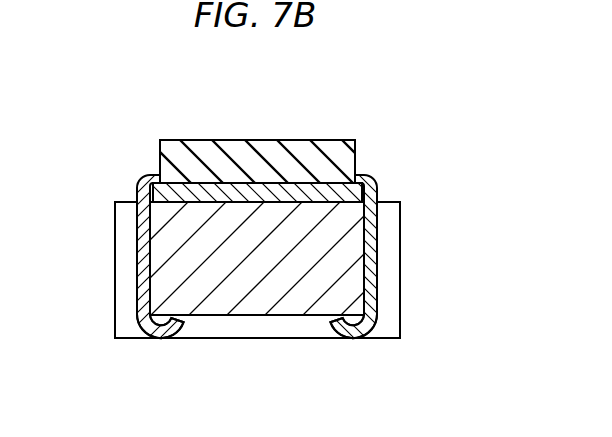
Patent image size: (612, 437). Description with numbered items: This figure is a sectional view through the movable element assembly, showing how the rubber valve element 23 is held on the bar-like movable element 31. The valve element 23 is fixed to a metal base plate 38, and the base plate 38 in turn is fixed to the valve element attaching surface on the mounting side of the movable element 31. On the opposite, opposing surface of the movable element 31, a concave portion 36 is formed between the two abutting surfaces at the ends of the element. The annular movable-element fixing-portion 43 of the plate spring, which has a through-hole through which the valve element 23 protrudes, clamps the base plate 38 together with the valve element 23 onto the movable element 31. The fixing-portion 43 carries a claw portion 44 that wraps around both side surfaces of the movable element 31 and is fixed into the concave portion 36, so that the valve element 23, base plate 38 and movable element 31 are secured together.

The valve element 23 is at (243, 160).
The base plate 38 is at (300, 192).
The movable element 31 is at (243, 270).
The concave portion 36 is at (296, 327).
The movable-element fixing-portion 43 is at (142, 248).
The claw portion 44 is at (163, 333).